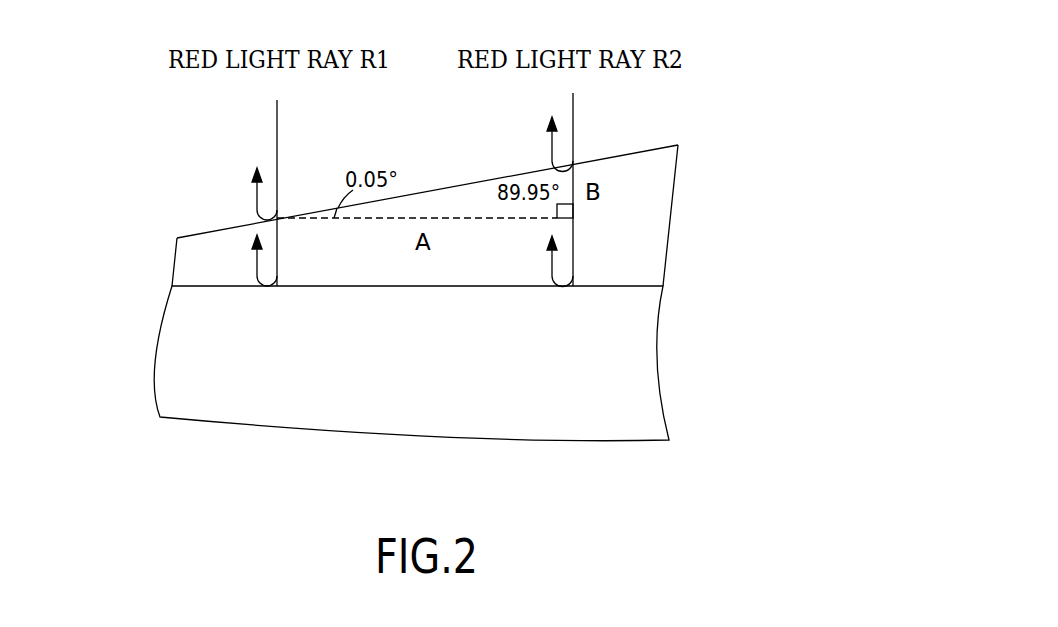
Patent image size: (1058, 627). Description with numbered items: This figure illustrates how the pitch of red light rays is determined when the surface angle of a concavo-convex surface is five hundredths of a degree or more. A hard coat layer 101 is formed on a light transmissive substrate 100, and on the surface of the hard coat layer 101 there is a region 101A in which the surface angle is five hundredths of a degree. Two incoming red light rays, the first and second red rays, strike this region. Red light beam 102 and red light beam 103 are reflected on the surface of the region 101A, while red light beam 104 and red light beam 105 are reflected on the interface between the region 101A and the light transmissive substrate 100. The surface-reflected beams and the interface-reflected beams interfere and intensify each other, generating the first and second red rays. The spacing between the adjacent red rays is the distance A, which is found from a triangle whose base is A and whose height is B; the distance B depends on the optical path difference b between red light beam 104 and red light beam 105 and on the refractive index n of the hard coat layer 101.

The light transmissive substrate 100 is at (632, 377).
The hard coat layer 101 is at (657, 180).
The region 101A is at (422, 190).
The red light beam 102 is at (277, 132).
The red light beam 103 is at (573, 125).
The red light beam 104 is at (257, 264).
The red light beam 105 is at (573, 255).